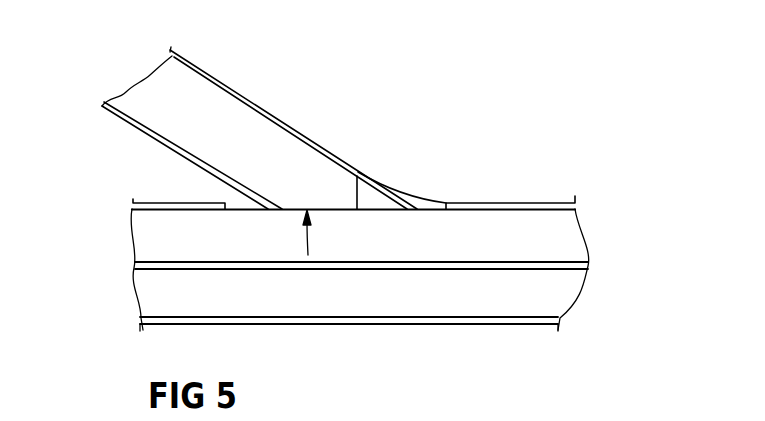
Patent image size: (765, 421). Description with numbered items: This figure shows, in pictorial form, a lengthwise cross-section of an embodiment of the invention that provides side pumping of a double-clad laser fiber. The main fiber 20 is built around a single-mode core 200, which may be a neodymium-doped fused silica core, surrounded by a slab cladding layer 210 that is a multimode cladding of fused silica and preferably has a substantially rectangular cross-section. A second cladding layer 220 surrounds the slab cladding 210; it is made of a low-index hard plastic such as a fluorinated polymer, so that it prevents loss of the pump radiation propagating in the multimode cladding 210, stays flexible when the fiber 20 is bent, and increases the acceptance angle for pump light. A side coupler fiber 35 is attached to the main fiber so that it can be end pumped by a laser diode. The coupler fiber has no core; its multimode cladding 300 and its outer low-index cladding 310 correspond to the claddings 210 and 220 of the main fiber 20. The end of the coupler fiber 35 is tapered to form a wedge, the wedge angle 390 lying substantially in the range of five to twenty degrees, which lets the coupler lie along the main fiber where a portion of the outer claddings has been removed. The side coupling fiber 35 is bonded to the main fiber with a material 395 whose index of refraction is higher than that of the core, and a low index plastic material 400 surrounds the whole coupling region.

The fiber 20 is at (427, 347).
The side coupler fiber 35 is at (323, 62).
The single-mode core 200 is at (142, 288).
The slab cladding layer 210 is at (193, 308).
The second cladding layer 220 is at (308, 320).
The cladding 300 is at (283, 148).
The cladding 310 is at (213, 78).
The angle 390 is at (339, 156).
The bonding material 395 is at (357, 176).
The low index plastic material 400 is at (214, 202).